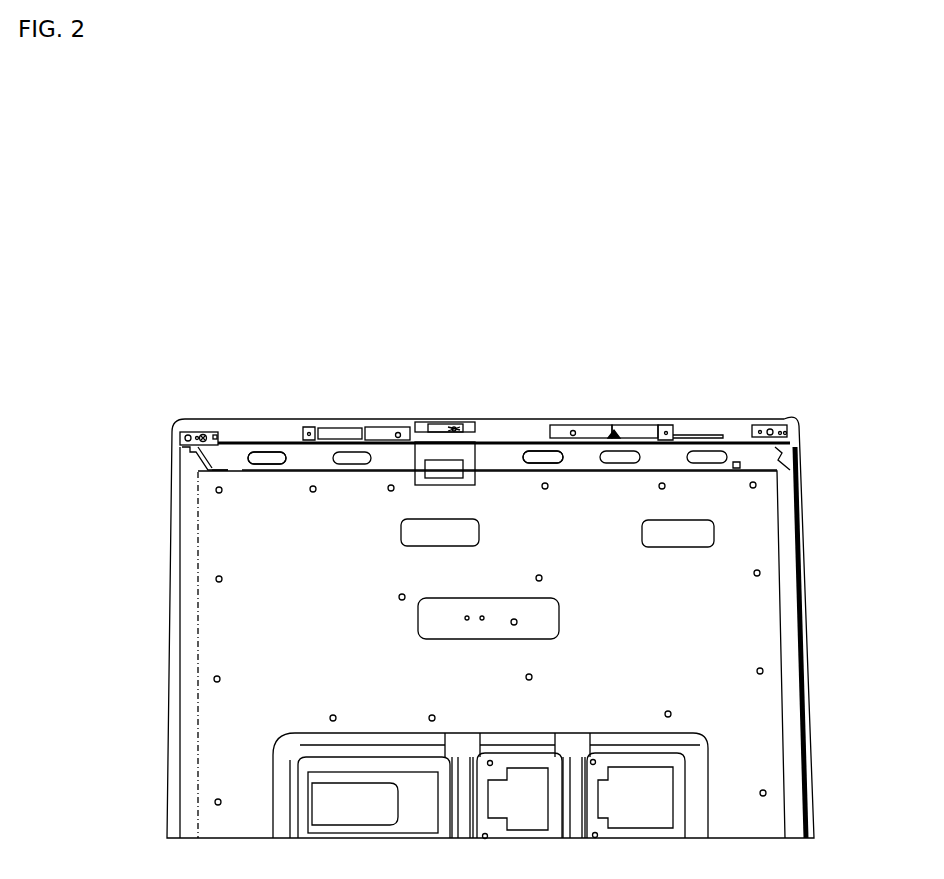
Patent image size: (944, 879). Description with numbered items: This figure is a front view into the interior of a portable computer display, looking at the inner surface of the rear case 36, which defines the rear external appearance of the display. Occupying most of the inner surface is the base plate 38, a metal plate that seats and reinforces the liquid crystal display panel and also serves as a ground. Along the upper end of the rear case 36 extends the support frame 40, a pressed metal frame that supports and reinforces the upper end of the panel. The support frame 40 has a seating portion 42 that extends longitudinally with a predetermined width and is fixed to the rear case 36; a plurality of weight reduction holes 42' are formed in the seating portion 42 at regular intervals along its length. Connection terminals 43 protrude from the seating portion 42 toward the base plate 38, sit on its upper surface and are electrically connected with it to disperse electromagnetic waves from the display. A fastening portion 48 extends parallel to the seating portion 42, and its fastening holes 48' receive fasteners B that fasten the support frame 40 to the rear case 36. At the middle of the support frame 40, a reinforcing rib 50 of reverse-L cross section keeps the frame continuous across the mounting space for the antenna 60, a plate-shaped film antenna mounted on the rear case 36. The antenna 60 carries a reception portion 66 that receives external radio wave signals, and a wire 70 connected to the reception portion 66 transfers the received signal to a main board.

The rear case 36 is at (167, 700).
The base plate 38 is at (697, 627).
The support frame 40 is at (287, 495).
The seating portion 42 is at (213, 394).
The weight reduction holes 42' is at (406, 391).
The connection terminals 43 is at (303, 433).
The fastening portion 48 is at (520, 379).
The fastening holes 48' is at (487, 415).
The reinforcing rib 50 is at (430, 423).
The antenna 60 is at (433, 453).
The reception portion 66 is at (455, 424).
The wire 70 is at (460, 428).
The fasteners B is at (192, 432).